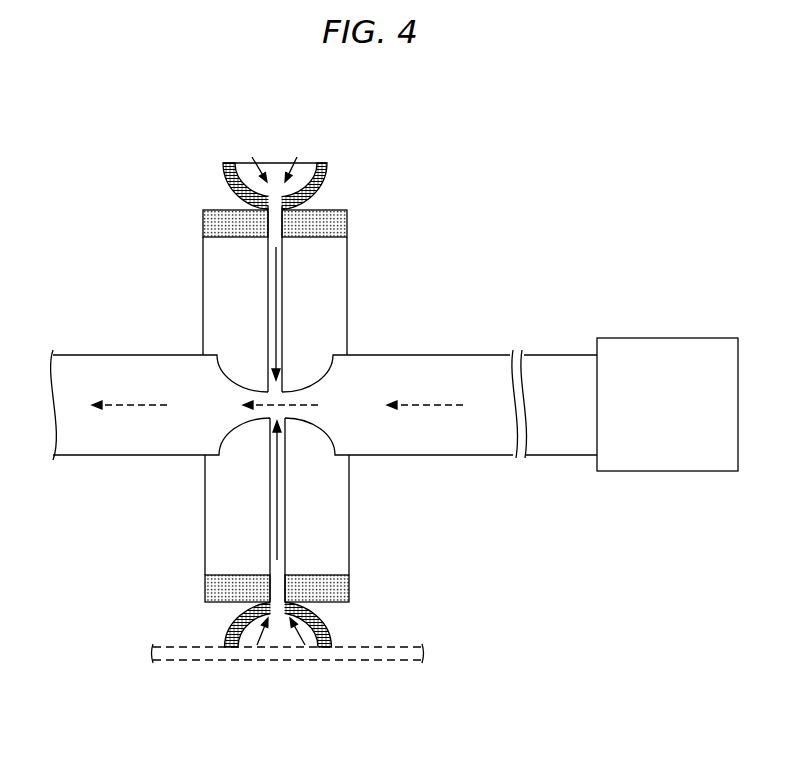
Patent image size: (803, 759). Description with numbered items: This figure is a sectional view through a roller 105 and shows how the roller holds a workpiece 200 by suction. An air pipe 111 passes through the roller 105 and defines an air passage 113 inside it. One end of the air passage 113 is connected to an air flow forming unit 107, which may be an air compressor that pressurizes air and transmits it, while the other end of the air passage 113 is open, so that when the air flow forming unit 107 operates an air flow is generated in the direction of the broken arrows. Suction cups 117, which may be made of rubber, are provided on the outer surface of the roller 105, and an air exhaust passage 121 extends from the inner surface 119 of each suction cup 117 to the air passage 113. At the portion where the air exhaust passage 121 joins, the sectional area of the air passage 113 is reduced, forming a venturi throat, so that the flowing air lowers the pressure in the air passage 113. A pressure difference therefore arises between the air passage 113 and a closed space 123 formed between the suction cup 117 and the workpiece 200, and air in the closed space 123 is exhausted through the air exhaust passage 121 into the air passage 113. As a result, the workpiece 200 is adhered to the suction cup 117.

The roller 105 is at (336, 208).
The air flow forming unit 107 is at (647, 338).
The air pipe 111 is at (462, 355).
The air passage 113 is at (162, 438).
The suction cup 117 is at (319, 179).
The inner surface 119 is at (247, 182).
The air exhaust passage 121 is at (283, 280).
The closed space 123 is at (308, 636).
The workpiece 200 is at (257, 661).